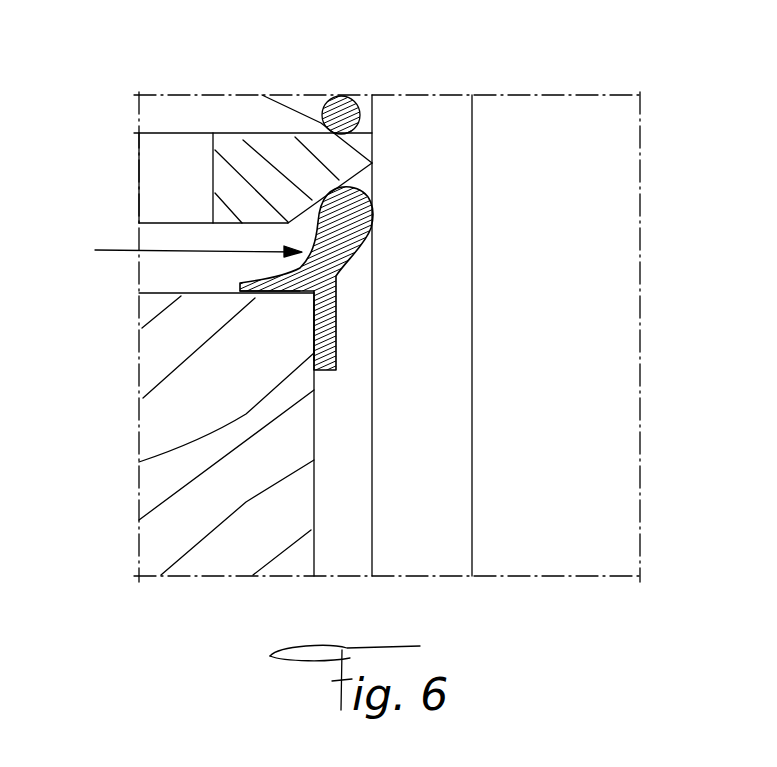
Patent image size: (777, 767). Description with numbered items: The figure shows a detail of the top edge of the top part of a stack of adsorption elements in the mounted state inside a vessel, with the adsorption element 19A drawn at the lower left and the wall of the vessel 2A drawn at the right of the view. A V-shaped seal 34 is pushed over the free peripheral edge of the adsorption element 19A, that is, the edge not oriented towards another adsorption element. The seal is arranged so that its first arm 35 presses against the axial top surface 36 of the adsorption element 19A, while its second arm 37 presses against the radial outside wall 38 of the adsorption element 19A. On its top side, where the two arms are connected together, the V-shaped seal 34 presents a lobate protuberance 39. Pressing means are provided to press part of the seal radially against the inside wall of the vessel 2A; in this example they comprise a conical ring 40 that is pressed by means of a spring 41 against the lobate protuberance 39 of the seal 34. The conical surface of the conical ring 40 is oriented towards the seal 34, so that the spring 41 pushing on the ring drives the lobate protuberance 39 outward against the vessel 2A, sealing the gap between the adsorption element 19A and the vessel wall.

The conical ring 40 is at (233, 176).
The V-shaped seal 34 is at (172, 249).
The axial top surface 36 is at (201, 292).
The first arm 35 is at (272, 292).
The second arm 37 is at (314, 323).
The adsorption element 19A is at (165, 537).
The radial outside wall 38 is at (315, 507).
The vessel 2A is at (457, 305).
The spring 41 is at (343, 97).
The lobate protuberance 39 is at (372, 213).